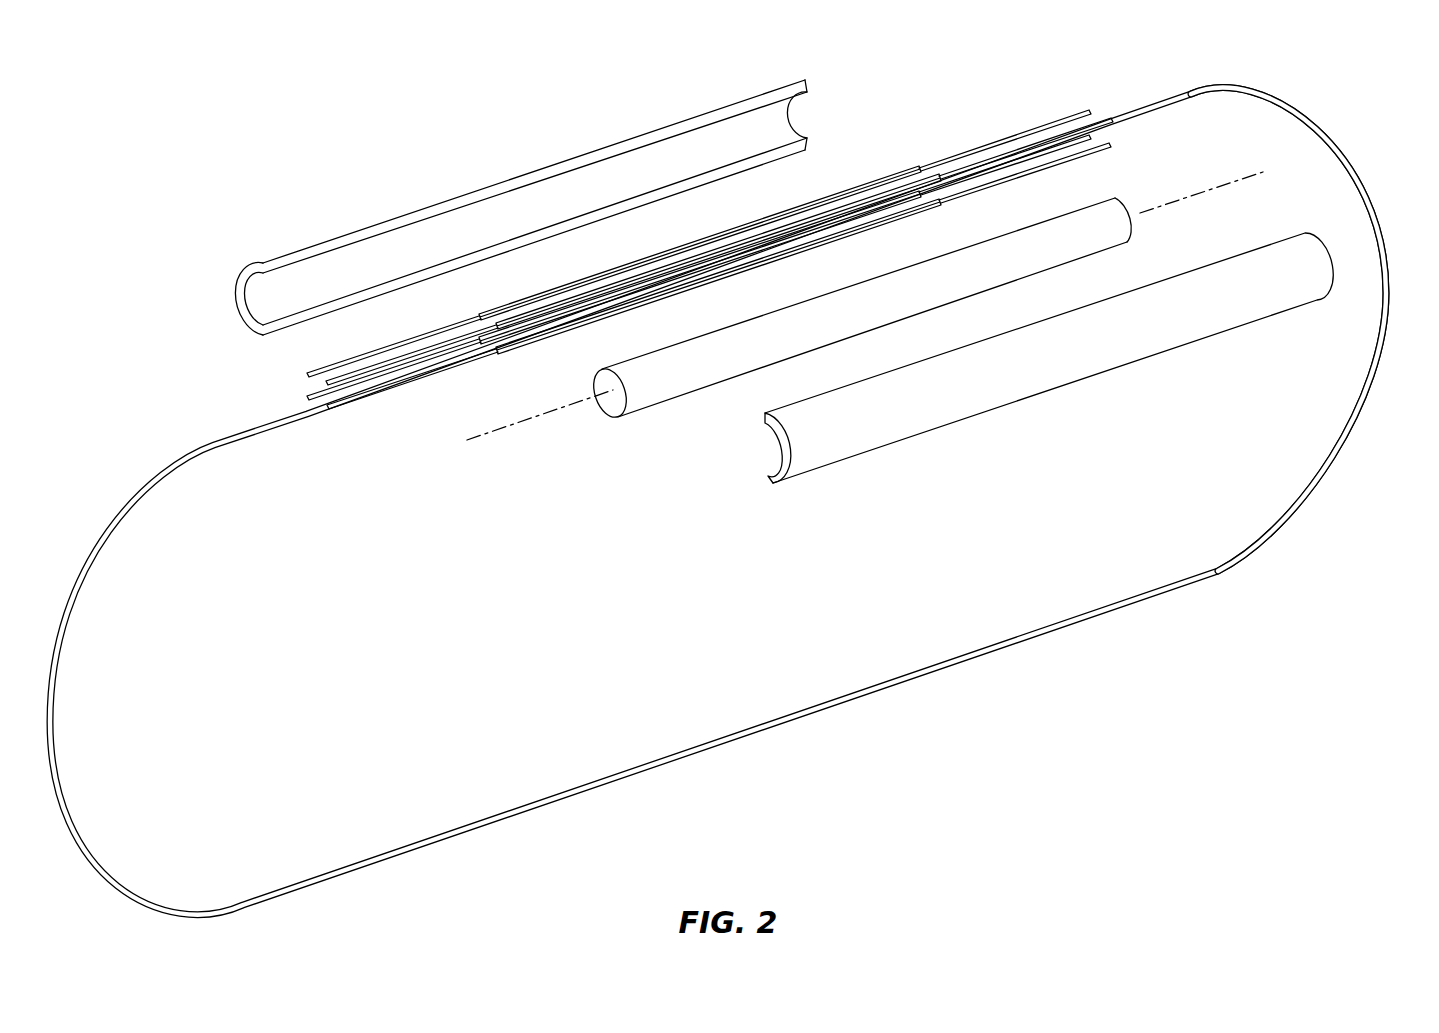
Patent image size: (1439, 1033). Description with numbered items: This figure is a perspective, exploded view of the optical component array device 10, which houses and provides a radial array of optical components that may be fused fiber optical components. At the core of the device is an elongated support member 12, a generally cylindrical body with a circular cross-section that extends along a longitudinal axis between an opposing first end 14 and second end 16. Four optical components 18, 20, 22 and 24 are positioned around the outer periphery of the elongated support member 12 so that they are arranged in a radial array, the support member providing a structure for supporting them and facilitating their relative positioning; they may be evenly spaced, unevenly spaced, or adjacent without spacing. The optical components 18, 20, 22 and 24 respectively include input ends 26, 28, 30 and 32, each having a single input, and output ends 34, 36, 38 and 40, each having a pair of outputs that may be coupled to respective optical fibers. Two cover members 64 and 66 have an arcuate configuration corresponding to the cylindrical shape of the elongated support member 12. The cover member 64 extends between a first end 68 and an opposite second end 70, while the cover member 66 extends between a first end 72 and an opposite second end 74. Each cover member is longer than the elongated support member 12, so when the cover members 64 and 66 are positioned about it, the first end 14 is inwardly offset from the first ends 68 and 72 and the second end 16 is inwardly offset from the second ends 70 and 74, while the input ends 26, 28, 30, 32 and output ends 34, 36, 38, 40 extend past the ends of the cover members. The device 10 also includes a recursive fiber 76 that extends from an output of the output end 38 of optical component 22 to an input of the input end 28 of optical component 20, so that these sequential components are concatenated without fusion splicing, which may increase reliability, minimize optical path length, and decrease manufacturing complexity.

The optical component array device 10 is at (249, 86).
The elongated support member 12 is at (598, 427).
The first end 14 is at (603, 385).
The second end 16 is at (1138, 216).
The optical component 18 is at (568, 280).
The optical component 20 is at (620, 270).
The optical component 22 is at (622, 320).
The optical component 24 is at (637, 300).
The input end 26 is at (1075, 113).
The input end 28 is at (1110, 118).
The input end 30 is at (1043, 168).
The input end 32 is at (1097, 147).
The output end 34 is at (308, 375).
The output end 36 is at (327, 383).
The output end 38 is at (328, 407).
The output end 40 is at (308, 398).
The cover member 64 is at (569, 156).
The cover member 66 is at (1051, 400).
The first end 68 is at (240, 282).
The second end 70 is at (805, 80).
The first end 72 is at (768, 482).
The second end 74 is at (1333, 272).
The recursive fiber 76 is at (811, 722).